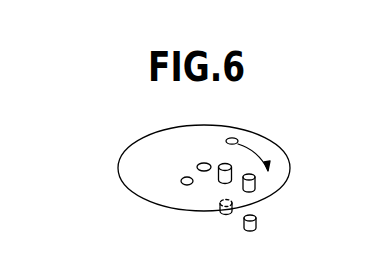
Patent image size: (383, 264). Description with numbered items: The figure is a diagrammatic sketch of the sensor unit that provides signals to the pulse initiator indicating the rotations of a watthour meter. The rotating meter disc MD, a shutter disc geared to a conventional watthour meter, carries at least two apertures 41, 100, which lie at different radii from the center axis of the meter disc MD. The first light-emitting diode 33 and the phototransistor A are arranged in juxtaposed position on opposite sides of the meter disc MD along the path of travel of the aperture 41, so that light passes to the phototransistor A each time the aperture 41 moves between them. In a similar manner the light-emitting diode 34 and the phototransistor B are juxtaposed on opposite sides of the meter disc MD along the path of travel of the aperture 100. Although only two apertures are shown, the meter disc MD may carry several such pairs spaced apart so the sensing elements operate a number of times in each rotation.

The meter disc MD is at (266, 138).
The aperture 100 is at (181, 180).
The aperture 41 is at (226, 139).
The light-emitting diode 34 is at (220, 180).
The light-emitting diode 33 is at (255, 182).
The phototransistor B is at (219, 218).
The phototransistor A is at (263, 231).